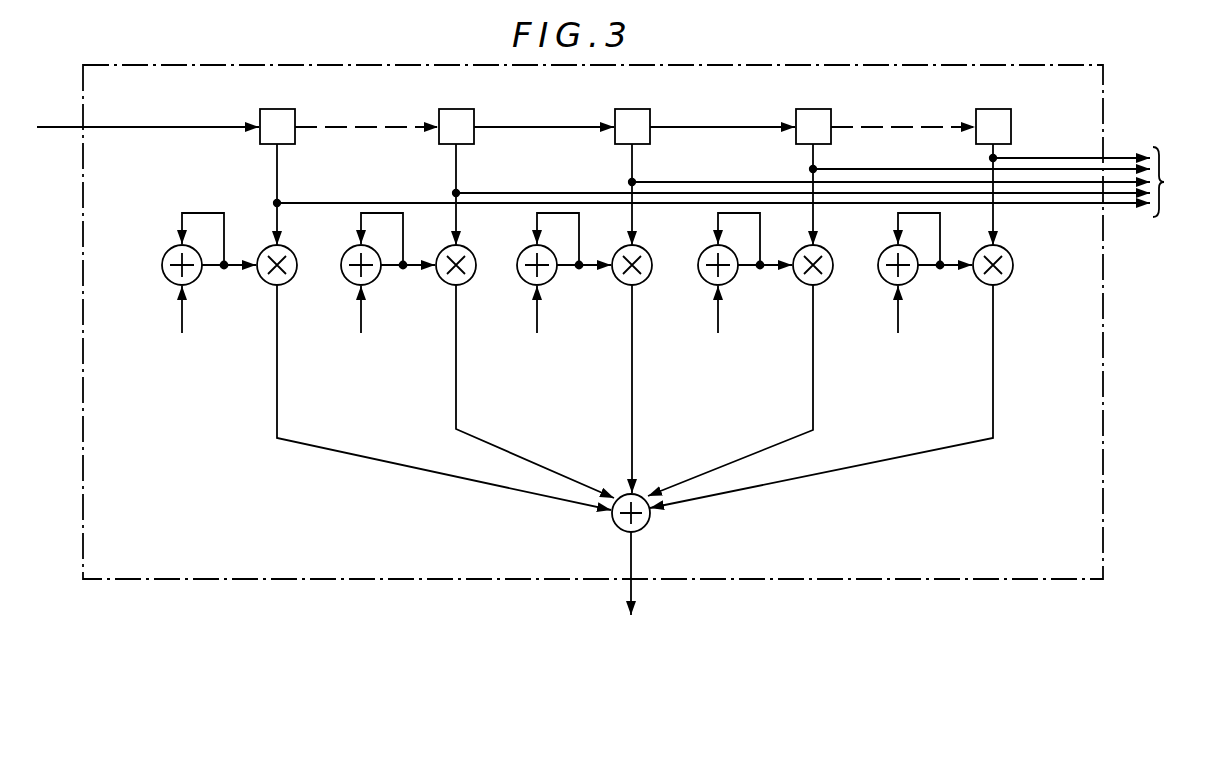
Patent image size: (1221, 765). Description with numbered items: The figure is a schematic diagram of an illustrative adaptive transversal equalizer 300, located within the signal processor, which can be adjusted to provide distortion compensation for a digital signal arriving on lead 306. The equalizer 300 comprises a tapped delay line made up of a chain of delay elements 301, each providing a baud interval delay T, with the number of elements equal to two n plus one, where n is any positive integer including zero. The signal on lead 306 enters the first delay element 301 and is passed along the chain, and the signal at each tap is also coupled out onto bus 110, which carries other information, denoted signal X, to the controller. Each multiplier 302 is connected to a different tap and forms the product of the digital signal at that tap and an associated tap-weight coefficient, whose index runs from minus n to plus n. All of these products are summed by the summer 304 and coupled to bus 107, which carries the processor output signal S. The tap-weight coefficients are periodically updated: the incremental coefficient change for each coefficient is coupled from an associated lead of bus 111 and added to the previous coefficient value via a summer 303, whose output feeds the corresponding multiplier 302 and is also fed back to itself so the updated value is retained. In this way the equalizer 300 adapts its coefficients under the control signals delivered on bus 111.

The adaptive transversal equalizer 300 is at (218, 63).
The delay elements 301 is at (275, 109).
The multipliers 302 is at (294, 254).
The summer 303 is at (166, 280).
The summer 304 is at (635, 408).
The lead 306 is at (64, 125).
The bus 110 is at (742, 183).
The bus 111 is at (535, 354).
The bus 107 is at (631, 602).